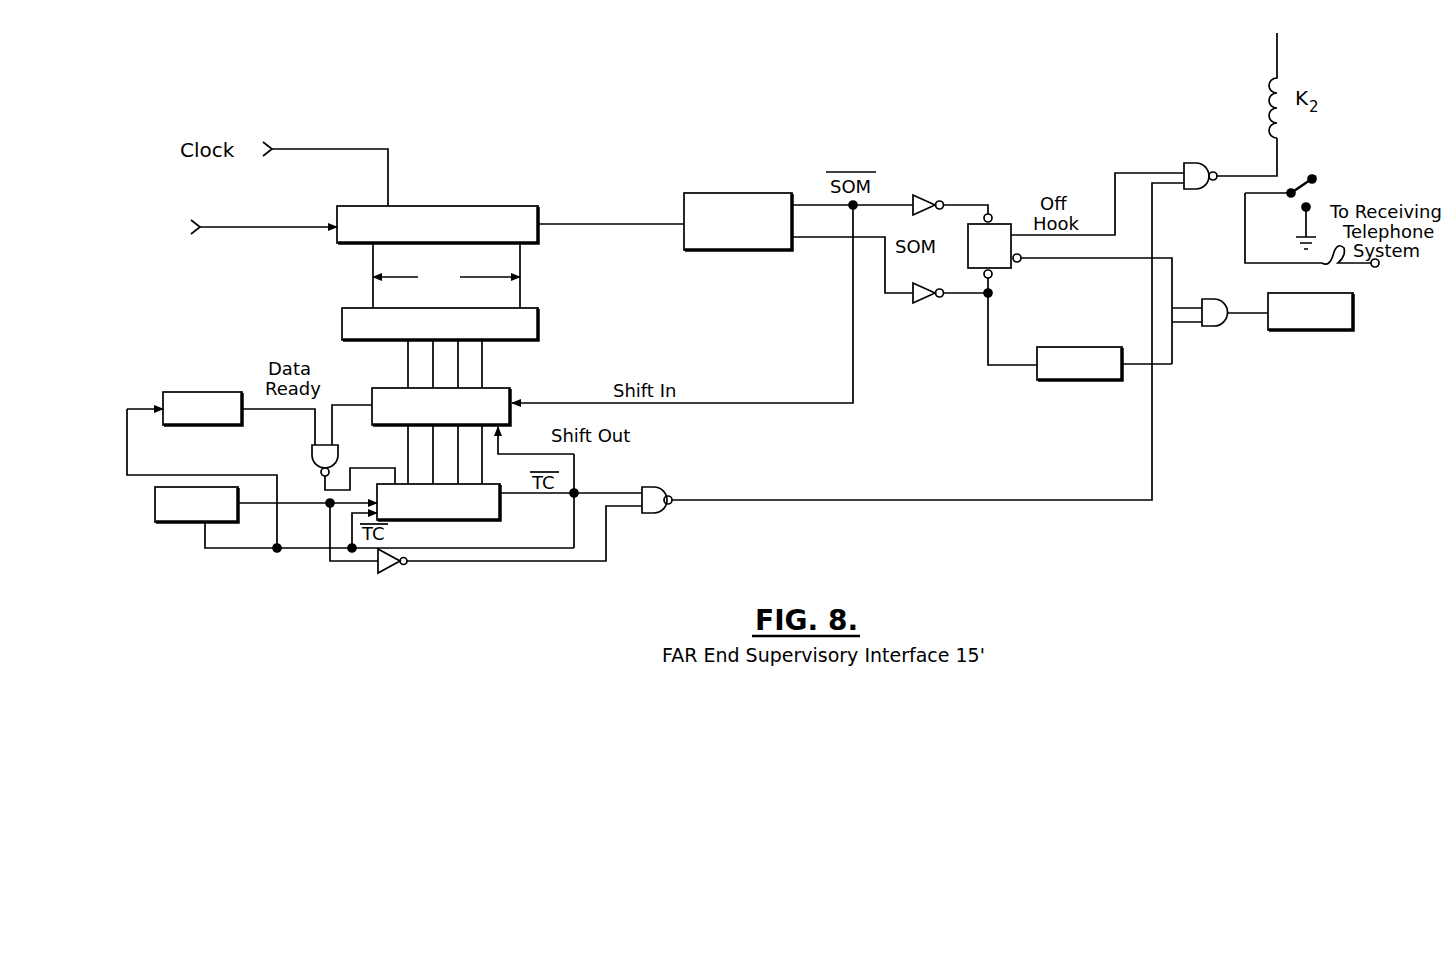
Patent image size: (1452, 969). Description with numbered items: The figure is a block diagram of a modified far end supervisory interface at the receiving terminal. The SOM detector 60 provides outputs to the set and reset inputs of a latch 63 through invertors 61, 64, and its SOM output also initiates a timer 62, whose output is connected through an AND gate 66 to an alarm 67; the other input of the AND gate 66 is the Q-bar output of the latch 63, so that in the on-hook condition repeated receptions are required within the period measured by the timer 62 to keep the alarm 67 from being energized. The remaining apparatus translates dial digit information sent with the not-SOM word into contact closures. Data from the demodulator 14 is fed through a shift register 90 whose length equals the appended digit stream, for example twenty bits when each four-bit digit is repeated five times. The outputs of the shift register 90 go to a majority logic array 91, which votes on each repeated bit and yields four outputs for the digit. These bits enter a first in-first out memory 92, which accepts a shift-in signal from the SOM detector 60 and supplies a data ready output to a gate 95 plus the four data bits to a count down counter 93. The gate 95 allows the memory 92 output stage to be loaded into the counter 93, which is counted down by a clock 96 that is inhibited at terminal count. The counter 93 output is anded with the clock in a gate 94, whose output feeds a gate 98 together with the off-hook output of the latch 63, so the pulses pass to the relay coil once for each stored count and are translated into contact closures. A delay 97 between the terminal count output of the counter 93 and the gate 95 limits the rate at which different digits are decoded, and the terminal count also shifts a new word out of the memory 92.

The demodulator 14 is at (209, 224).
The SOM detector 60 is at (745, 193).
The invertor 61 is at (918, 301).
The timer 62 is at (1075, 375).
The latch 63 is at (1000, 226).
The invertor 64 is at (922, 198).
The AND gate 66 is at (1208, 326).
The alarm 67 is at (1345, 318).
The shift register 90 is at (486, 205).
The majority logic array 91 is at (540, 327).
The memory 92 is at (493, 402).
The count down counter 93 is at (488, 505).
The gate 94 is at (650, 488).
The gate 95 is at (313, 455).
The clock 96 is at (170, 522).
The delay 97 is at (192, 392).
The gate 98 is at (1198, 163).